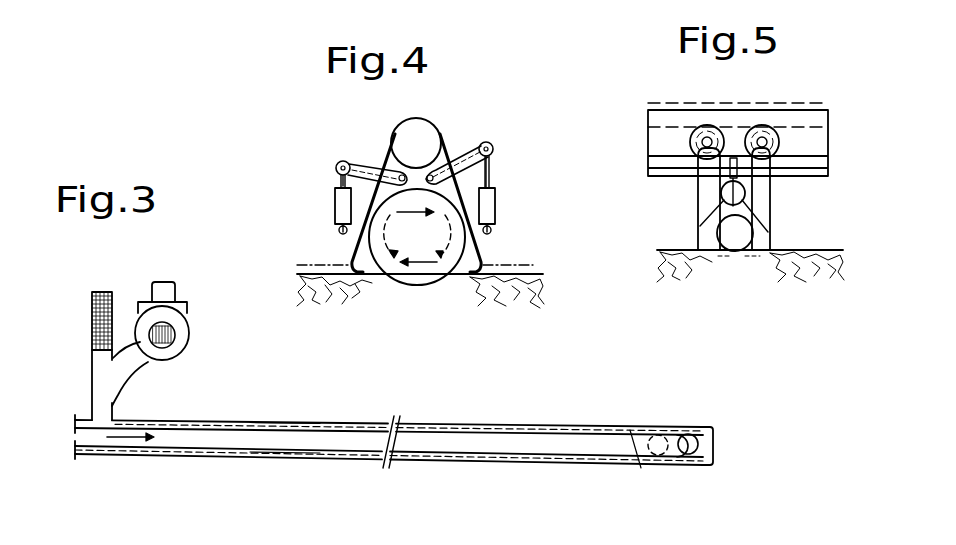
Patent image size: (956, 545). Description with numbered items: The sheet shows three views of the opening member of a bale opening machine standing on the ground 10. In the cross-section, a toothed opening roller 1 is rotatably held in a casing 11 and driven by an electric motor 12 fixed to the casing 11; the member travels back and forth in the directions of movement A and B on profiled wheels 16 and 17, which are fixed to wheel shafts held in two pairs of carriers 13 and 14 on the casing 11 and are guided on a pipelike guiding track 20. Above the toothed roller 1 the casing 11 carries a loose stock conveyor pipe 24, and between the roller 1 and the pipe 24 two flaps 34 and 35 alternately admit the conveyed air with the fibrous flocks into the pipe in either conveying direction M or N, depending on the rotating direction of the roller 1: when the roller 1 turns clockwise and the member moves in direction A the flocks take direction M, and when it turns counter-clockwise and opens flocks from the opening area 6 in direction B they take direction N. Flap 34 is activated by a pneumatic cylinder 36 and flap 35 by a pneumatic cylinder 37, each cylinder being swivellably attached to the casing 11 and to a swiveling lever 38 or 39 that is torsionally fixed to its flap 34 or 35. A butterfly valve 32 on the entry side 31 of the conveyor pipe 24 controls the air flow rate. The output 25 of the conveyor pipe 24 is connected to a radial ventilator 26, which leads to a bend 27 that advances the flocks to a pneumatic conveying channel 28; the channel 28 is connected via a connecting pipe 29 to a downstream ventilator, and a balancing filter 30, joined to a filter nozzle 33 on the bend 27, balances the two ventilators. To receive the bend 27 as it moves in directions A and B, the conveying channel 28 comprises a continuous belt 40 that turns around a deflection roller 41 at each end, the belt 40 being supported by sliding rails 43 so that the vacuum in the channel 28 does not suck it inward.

In FIG. 4, the toothed opening roller 1 is at (467, 252).
In FIG. 4, the opening area 6 is at (350, 253).
In FIG. 4, the ground 10 is at (295, 277).
In FIG. 5, the ground 10 is at (833, 257).
In FIG. 4, the casing 11 is at (445, 150).
In FIG. 5, the casing 11 is at (772, 228).
In FIG. 5, the electric motor 12 is at (737, 245).
In FIG. 5, the carriers 13 is at (705, 190).
In FIG. 5, the carriers 14 is at (763, 190).
In FIG. 5, the profiled wheel 16 is at (692, 125).
In FIG. 5, the profiled wheel 17 is at (783, 125).
In FIG. 5, the guiding track 20 is at (823, 167).
In FIG. 4, the loose stock conveyor pipe 24 is at (423, 137).
In FIG. 3, the output 25 is at (148, 292).
In FIG. 4, the output 25 is at (383, 152).
In FIG. 3, the ventilator 26 is at (187, 315).
In FIG. 3, the bend 27 is at (133, 360).
In FIG. 3, the pneumatic conveying channel 28 is at (222, 428).
In FIG. 3, the connecting pipe 29 is at (660, 435).
In FIG. 3, the balancing filter 30 is at (102, 288).
In FIG. 5, the entry side 31 is at (700, 216).
In FIG. 5, the butterfly valve 32 is at (727, 248).
In FIG. 3, the filter nozzle 33 is at (97, 358).
In FIG. 4, the flap 34 is at (460, 175).
In FIG. 4, the flap 35 is at (342, 176).
In FIG. 4, the pneumatic cylinder 36 is at (497, 203).
In FIG. 4, the pneumatic cylinder 37 is at (335, 200).
In FIG. 4, the swiveling lever 38 is at (494, 160).
In FIG. 4, the swiveling lever 39 is at (362, 165).
In FIG. 3, the continuous belt 40 is at (267, 450).
In FIG. 3, the deflection roller 41 is at (703, 441).
In FIG. 3, the sliding rails 43 is at (644, 466).
In FIG. 4, the direction of movement A is at (417, 237).
In FIG. 4, the direction of movement B is at (423, 279).
In FIG. 4, the conveying direction M is at (337, 213).
In FIG. 4, the conveying direction N is at (483, 240).